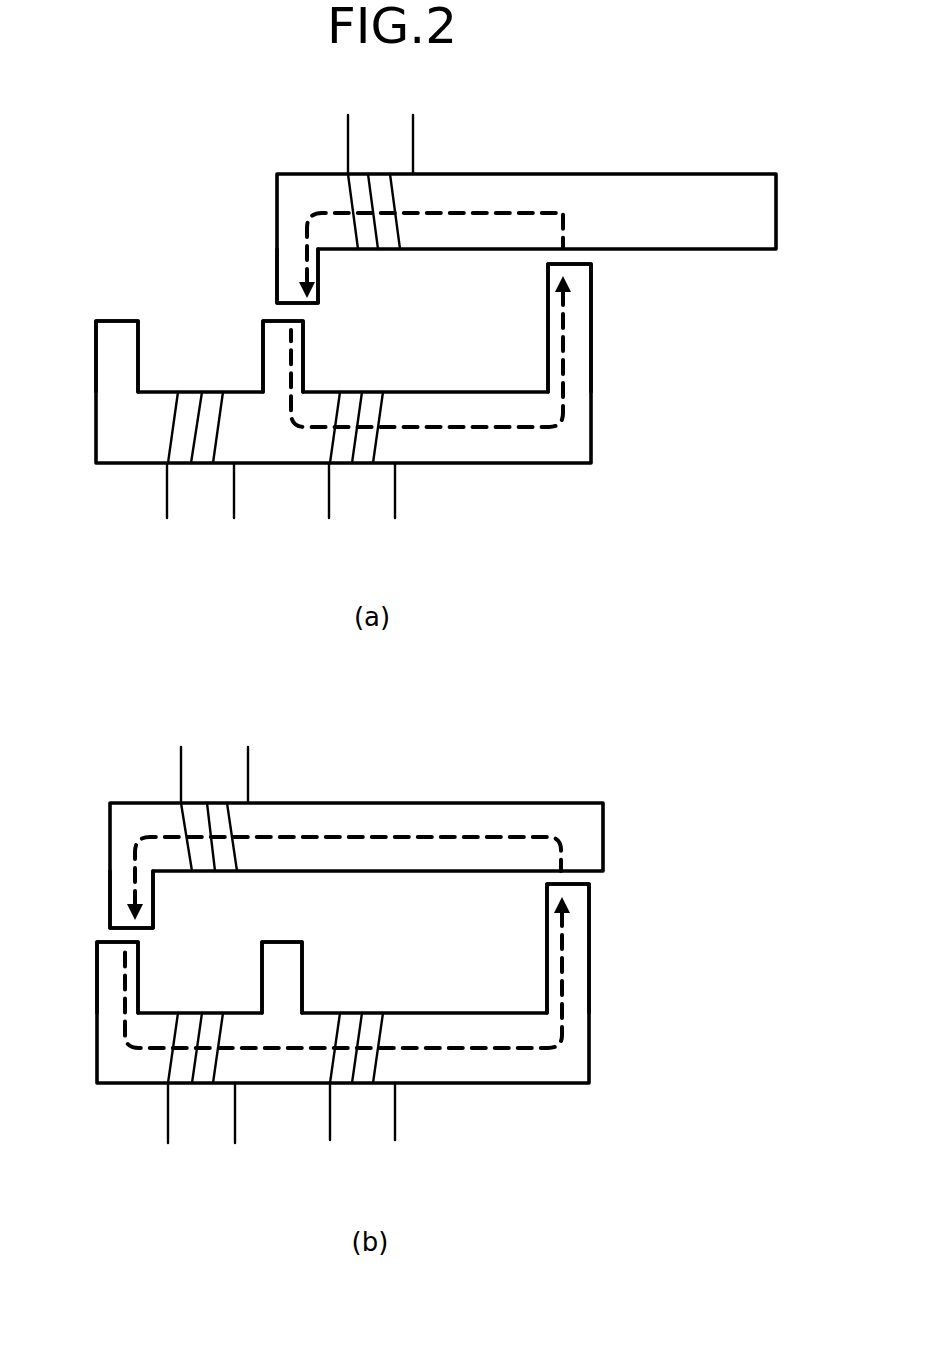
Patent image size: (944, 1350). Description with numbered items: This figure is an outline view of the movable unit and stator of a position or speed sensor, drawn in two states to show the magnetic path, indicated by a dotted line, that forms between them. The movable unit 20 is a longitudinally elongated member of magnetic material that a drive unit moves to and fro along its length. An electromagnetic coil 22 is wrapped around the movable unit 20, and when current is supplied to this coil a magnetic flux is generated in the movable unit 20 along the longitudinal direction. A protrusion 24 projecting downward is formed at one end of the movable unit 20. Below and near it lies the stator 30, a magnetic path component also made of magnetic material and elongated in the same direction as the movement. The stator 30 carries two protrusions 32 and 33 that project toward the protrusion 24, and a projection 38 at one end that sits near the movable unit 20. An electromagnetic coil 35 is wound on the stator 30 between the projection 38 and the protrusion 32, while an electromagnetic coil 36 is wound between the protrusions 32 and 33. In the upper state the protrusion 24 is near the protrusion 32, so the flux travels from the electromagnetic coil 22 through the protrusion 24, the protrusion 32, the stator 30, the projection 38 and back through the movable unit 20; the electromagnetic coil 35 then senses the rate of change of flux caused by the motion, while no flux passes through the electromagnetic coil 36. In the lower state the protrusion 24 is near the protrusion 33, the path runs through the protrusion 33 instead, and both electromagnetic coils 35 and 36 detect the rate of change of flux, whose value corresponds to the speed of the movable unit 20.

The movable unit 20 is at (703, 235).
The electromagnetic coil 22 is at (380, 178).
The protrusion 24 is at (283, 288).
The stator 30 is at (563, 463).
The protrusion 32 is at (273, 330).
The protrusion 33 is at (115, 333).
The electromagnetic coil 35 is at (335, 447).
The electromagnetic coil 36 is at (180, 443).
The projection 38 is at (582, 340).